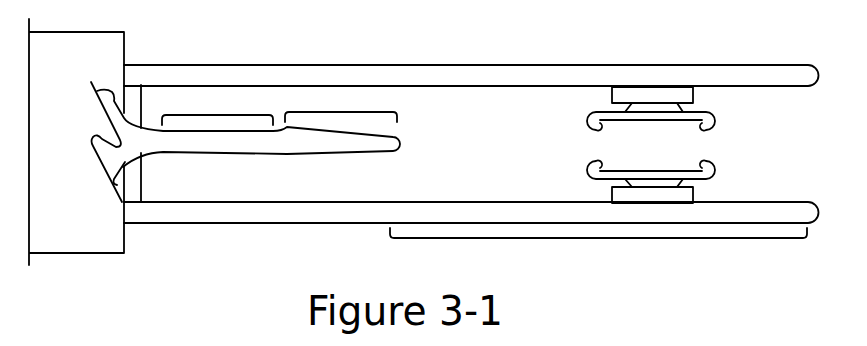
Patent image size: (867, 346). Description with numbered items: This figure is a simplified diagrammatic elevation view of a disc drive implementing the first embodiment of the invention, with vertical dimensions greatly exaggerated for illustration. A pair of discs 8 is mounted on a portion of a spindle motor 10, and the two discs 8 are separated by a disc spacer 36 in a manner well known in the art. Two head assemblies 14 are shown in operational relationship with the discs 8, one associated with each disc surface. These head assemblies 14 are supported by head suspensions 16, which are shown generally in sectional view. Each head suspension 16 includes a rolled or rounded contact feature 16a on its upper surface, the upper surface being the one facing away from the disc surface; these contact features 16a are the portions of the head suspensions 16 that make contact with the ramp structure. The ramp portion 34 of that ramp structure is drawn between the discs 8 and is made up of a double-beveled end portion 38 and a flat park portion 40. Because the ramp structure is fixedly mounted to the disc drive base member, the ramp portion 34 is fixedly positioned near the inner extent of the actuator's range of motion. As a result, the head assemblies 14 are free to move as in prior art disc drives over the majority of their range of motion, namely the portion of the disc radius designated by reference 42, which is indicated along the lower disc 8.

The spindle motor 10 is at (66, 227).
The discs 8 is at (728, 75).
The head assemblies 14 is at (649, 97).
The head suspensions 16 is at (713, 121).
The contact features 16a is at (588, 160).
The ramp portion 34 is at (290, 142).
The disc spacer 36 is at (128, 183).
The double-beveled end portion 38 is at (342, 112).
The park portion 40 is at (217, 115).
The portion of the disc radius 42 is at (587, 238).